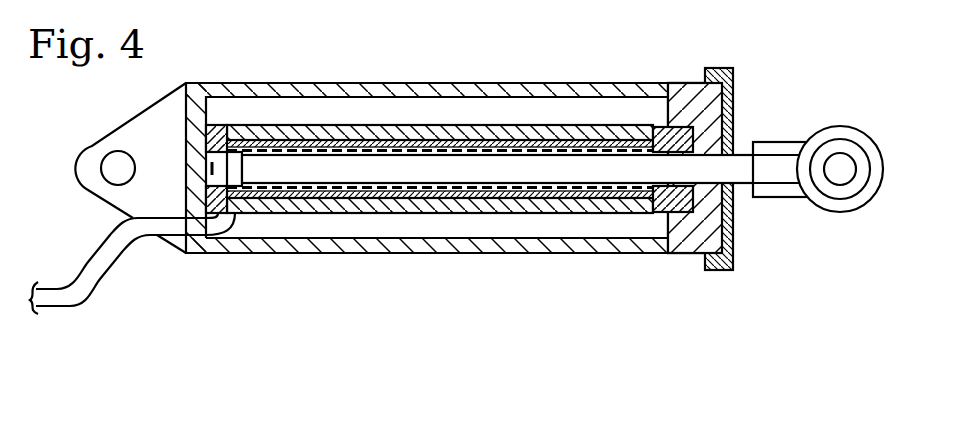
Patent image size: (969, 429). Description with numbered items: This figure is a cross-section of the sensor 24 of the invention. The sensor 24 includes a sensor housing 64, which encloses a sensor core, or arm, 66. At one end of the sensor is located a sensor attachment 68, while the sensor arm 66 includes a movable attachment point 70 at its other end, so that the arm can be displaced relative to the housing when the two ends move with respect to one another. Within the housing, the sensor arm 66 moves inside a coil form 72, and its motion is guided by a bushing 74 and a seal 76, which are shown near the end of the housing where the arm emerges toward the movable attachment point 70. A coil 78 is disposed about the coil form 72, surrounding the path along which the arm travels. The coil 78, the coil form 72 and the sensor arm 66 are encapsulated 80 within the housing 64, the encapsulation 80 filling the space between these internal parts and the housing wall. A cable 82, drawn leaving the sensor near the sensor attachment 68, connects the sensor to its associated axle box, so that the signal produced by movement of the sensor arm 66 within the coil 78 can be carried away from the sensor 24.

The sensor 24 is at (478, 204).
The sensor housing 64 is at (433, 83).
The sensor arm 66 is at (742, 153).
The sensor attachment 68 is at (75, 170).
The movable attachment point 70 is at (883, 170).
The coil form 72 is at (582, 140).
The bushing 74 is at (683, 213).
The seal 76 is at (718, 272).
The coil 78 is at (517, 206).
The encapsulation 80 is at (330, 228).
The cable 82 is at (53, 308).